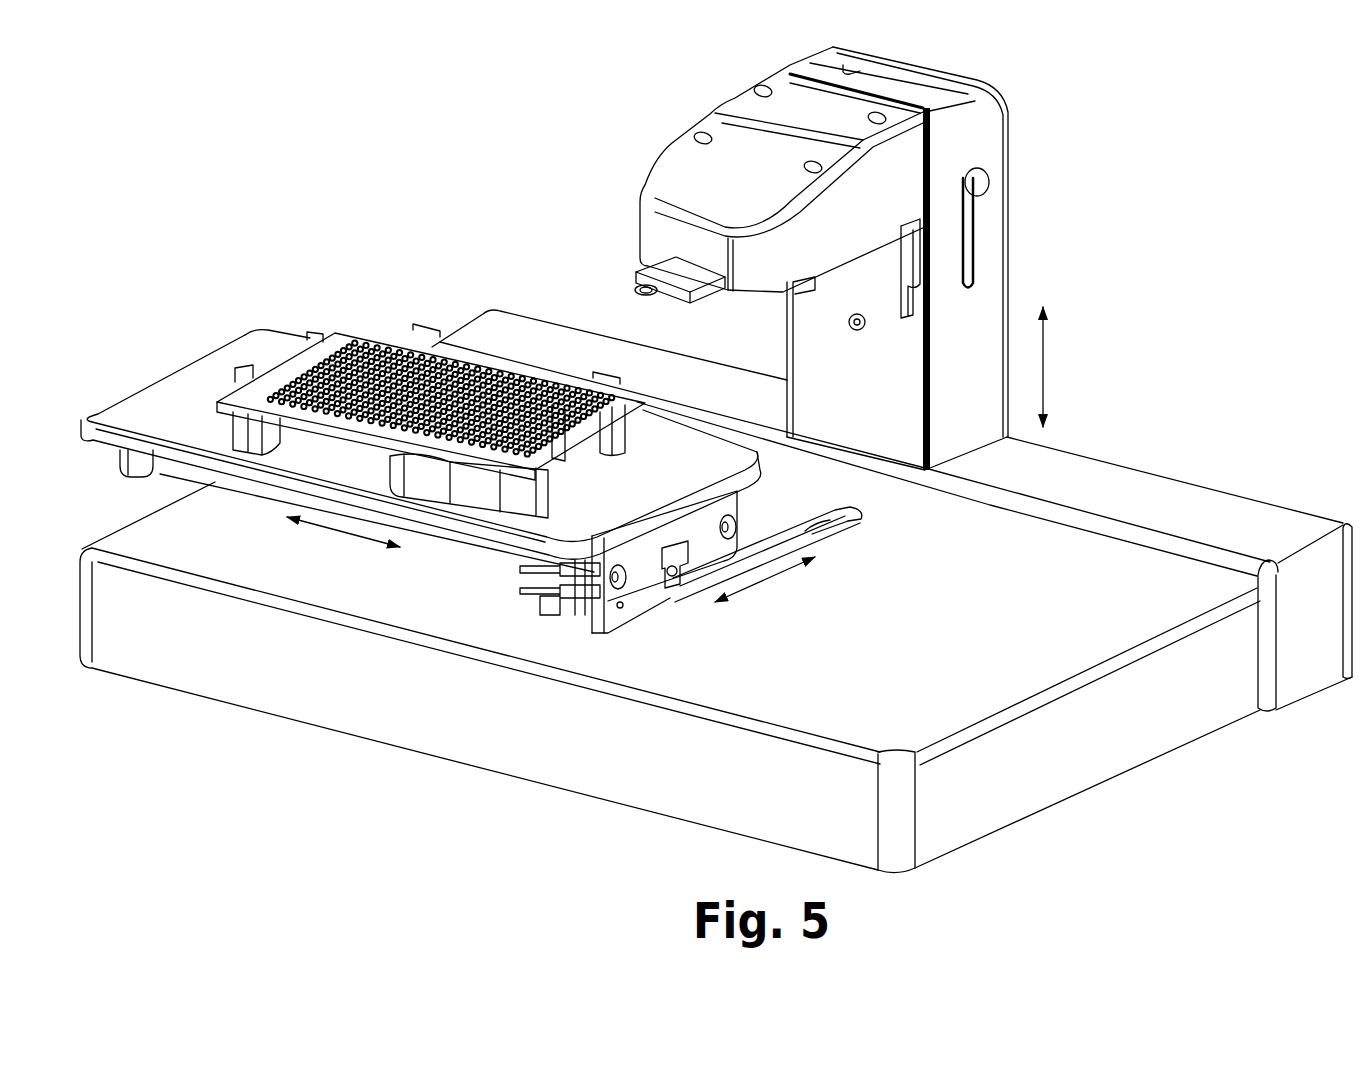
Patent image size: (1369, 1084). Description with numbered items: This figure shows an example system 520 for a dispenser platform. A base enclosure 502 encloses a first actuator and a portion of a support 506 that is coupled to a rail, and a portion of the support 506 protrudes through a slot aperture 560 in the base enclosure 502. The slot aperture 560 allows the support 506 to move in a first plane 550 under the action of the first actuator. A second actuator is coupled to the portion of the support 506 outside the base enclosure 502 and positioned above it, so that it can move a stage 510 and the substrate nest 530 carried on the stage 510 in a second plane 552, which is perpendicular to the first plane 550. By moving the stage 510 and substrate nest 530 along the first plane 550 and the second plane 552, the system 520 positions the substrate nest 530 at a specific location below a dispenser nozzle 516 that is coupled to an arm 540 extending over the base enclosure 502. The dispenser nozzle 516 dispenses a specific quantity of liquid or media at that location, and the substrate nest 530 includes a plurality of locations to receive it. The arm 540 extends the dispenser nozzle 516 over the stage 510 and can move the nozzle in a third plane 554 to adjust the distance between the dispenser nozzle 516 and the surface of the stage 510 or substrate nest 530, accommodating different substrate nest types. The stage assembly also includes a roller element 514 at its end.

The base enclosure 502 is at (1097, 738).
The support 506 is at (633, 613).
The stage 510 is at (142, 407).
The roller 514 is at (173, 470).
The dispenser nozzle 516 is at (617, 307).
The system 520 is at (1150, 166).
The substrate nest 530 is at (373, 336).
The arm 540 is at (883, 197).
The first plane 550 is at (777, 575).
The second plane 552 is at (337, 530).
The third plane 554 is at (1043, 345).
The slot aperture 560 is at (823, 526).